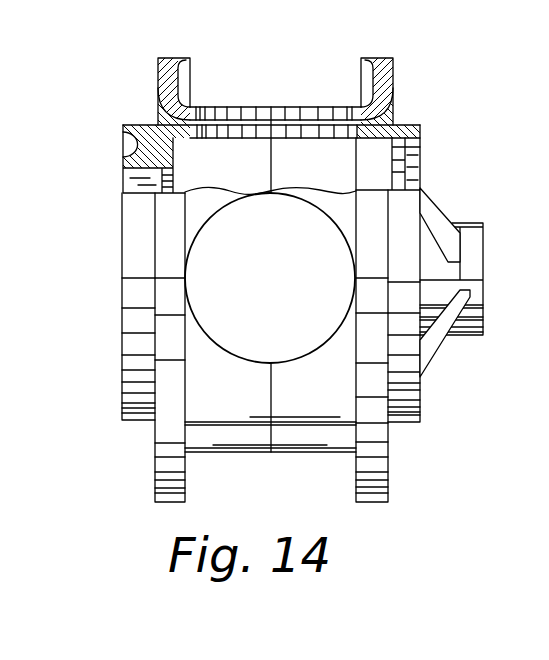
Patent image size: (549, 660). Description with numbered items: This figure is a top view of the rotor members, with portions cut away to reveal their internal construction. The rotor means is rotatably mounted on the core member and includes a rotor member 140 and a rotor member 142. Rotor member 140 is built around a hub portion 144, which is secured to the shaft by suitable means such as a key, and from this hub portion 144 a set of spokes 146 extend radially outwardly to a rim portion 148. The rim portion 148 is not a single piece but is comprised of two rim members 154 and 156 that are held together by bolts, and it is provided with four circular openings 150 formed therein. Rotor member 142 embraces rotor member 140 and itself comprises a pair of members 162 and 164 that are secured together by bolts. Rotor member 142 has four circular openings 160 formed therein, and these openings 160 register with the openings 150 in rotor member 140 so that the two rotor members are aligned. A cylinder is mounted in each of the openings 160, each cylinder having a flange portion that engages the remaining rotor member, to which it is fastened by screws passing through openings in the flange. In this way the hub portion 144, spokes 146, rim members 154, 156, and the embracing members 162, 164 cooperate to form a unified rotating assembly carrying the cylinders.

The rotor member 140 is at (438, 180).
The rotor member 142 is at (403, 77).
The hub portion 144 is at (481, 224).
The spokes 146 is at (437, 209).
The rim portion 148 is at (423, 127).
The circular openings 150 is at (250, 135).
The rim member 154 is at (418, 408).
The rim member 156 is at (121, 397).
The circular openings 160 is at (315, 107).
The member 162 is at (387, 58).
The member 164 is at (157, 58).